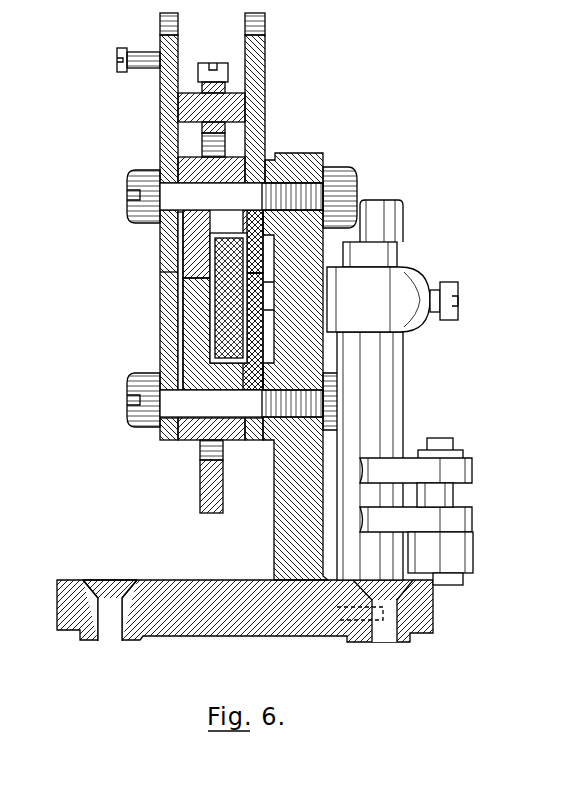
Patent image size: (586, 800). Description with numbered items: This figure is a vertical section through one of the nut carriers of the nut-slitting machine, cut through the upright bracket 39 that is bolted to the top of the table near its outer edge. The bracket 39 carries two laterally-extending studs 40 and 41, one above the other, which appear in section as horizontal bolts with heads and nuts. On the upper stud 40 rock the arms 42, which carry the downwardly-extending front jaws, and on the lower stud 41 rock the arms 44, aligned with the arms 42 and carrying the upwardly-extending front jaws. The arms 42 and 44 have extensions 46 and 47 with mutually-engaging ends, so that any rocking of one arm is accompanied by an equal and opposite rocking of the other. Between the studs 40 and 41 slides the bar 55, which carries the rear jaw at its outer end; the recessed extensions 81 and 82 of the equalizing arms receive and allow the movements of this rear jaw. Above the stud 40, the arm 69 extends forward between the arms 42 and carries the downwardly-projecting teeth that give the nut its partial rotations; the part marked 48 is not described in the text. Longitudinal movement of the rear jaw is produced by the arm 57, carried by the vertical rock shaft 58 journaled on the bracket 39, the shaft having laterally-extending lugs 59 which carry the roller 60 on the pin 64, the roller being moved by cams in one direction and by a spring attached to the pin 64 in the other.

The upright bracket 39 is at (245, 585).
The upper stud 40 is at (145, 218).
The lower stud 41 is at (170, 397).
The arms 42 is at (160, 165).
The arms 44 is at (172, 443).
The extension 46 is at (160, 262).
The extension 47 is at (160, 282).
The yoke 48 is at (245, 28).
The bar 55 is at (218, 338).
The arm 57 is at (330, 283).
The vertical rock shaft 58 is at (385, 390).
The lugs 59 is at (435, 485).
The roller 60 is at (460, 558).
The pin 64 is at (465, 493).
The arm 69 is at (228, 130).
The extension 81 is at (160, 252).
The extension 82 is at (160, 303).